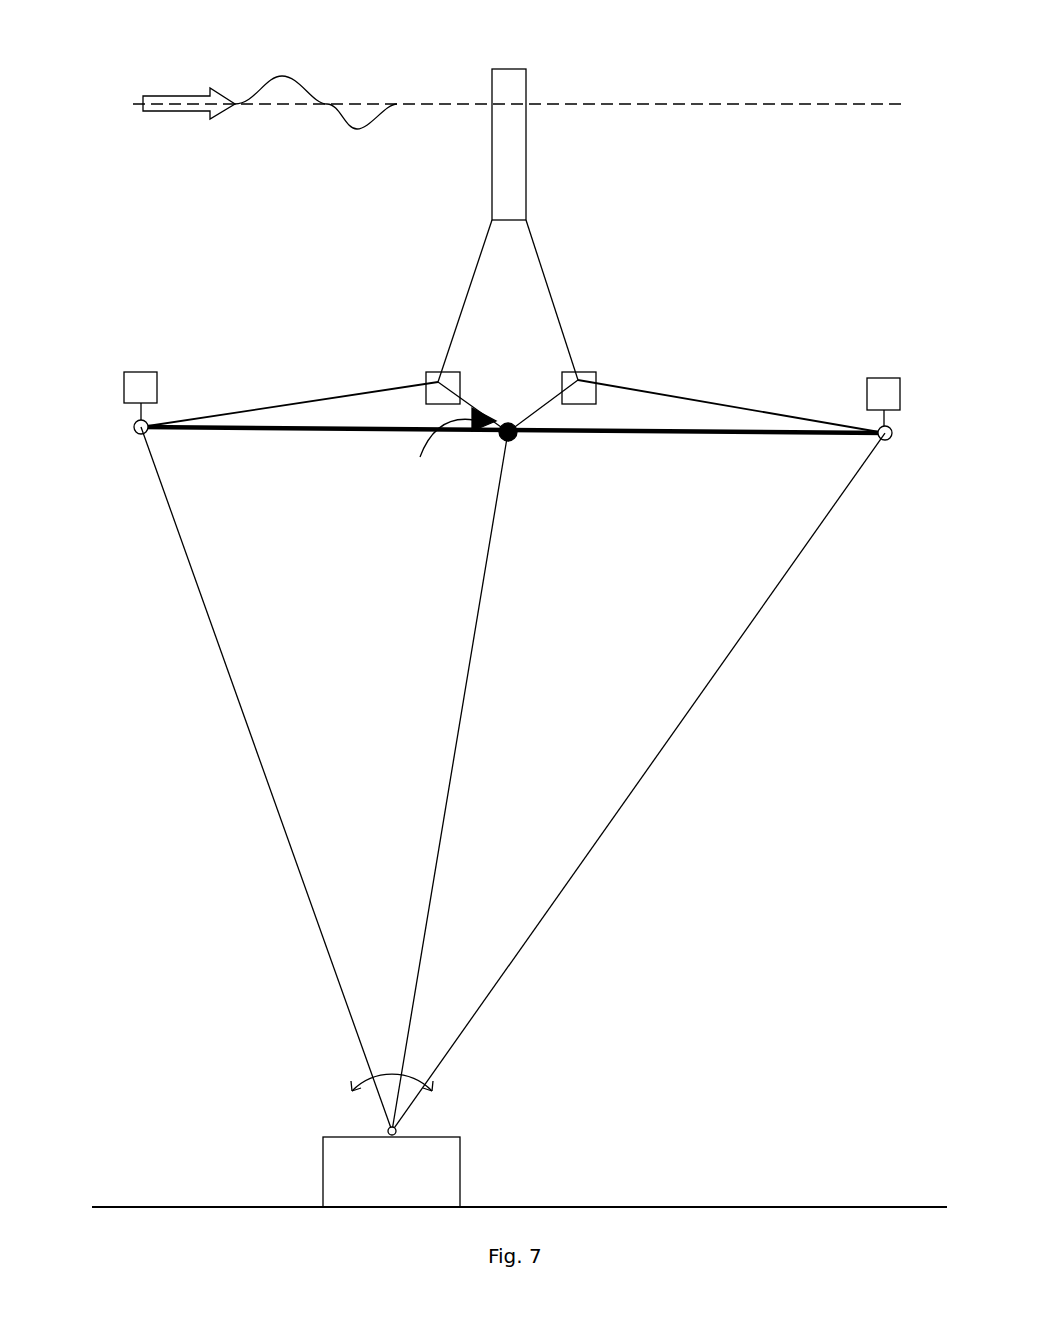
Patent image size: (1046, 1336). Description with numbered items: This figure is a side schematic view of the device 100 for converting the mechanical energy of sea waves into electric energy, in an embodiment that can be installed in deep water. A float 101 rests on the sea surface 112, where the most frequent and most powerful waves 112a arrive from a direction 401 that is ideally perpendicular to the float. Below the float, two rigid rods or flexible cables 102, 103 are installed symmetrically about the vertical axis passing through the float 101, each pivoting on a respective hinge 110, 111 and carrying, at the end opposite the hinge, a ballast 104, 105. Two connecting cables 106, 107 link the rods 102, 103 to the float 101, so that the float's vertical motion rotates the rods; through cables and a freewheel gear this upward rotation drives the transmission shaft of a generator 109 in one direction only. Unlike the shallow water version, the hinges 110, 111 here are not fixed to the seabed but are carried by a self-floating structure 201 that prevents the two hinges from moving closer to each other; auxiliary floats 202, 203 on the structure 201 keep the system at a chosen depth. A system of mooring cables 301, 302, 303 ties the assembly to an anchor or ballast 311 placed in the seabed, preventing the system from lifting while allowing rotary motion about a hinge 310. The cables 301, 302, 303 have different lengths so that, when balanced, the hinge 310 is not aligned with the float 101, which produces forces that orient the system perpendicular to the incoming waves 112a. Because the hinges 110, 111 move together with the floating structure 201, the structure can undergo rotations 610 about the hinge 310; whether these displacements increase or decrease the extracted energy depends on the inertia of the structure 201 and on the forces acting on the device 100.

The device 100 is at (170, 228).
The float 101 is at (509, 66).
The rigid rod or flexible cable 102 is at (232, 411).
The rigid rod or flexible cable 103 is at (803, 409).
The ballast 104 is at (424, 372).
The ballast 105 is at (598, 372).
The connecting cable 106 is at (485, 242).
The connecting cable 107 is at (540, 258).
The transmission shaft of a generator 109 is at (457, 446).
The hinge 110 is at (128, 422).
The hinge 111 is at (892, 428).
The sea surface 112 is at (687, 101).
The waves 112a is at (311, 89).
The structure 201 is at (635, 446).
The auxiliary float 202 is at (141, 368).
The auxiliary float 203 is at (883, 375).
The mooring cable 301 is at (733, 658).
The mooring cable 302 is at (245, 720).
The mooring cable 303 is at (485, 650).
The hinge 310 is at (387, 1135).
The anchor or ballast 311 is at (462, 1138).
The wave direction 401 is at (170, 88).
The rotations 610 is at (392, 1128).